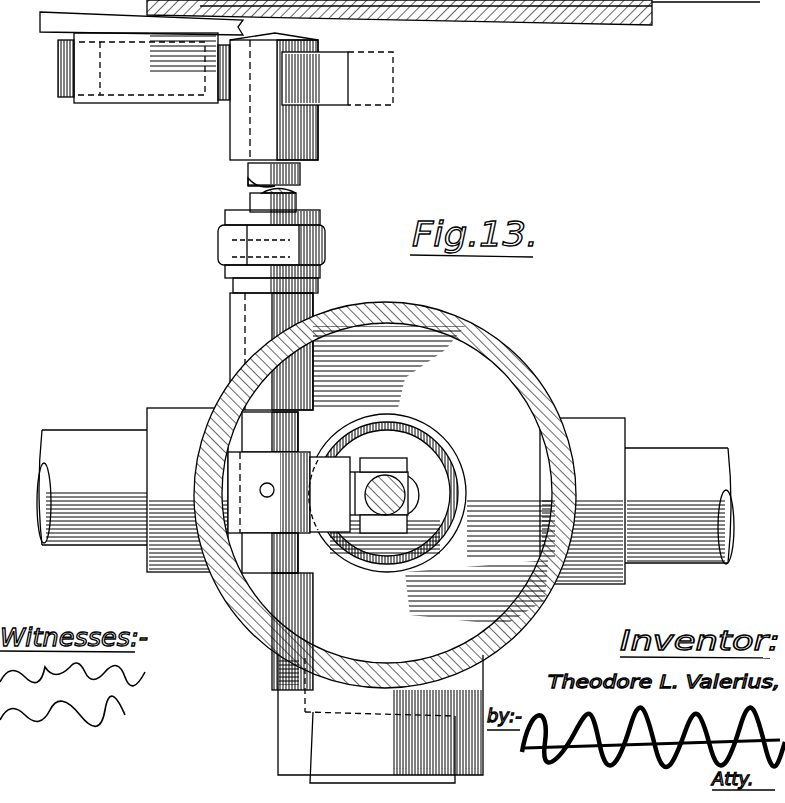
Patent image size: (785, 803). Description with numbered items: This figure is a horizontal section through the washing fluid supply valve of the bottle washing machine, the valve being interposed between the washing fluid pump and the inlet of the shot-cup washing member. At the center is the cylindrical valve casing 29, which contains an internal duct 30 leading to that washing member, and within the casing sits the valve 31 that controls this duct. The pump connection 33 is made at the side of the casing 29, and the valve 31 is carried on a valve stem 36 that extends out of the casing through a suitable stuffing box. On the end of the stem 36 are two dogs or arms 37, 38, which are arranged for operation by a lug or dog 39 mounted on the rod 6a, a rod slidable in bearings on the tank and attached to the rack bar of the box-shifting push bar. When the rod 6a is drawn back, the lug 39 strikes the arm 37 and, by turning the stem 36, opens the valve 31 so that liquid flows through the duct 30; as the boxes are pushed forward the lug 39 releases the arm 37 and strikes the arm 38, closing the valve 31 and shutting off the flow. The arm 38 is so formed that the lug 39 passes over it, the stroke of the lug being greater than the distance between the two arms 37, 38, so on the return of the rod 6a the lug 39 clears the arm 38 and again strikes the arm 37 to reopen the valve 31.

The rod 6a is at (121, 22).
The cylindrical valve casing 29 is at (535, 372).
The internal duct 30 is at (414, 493).
The valve 31 is at (443, 457).
The pump connection 33 is at (380, 719).
The valve stem 36 is at (290, 432).
The arm 37 is at (63, 95).
The arm 38 is at (330, 100).
The lug 39 is at (152, 68).